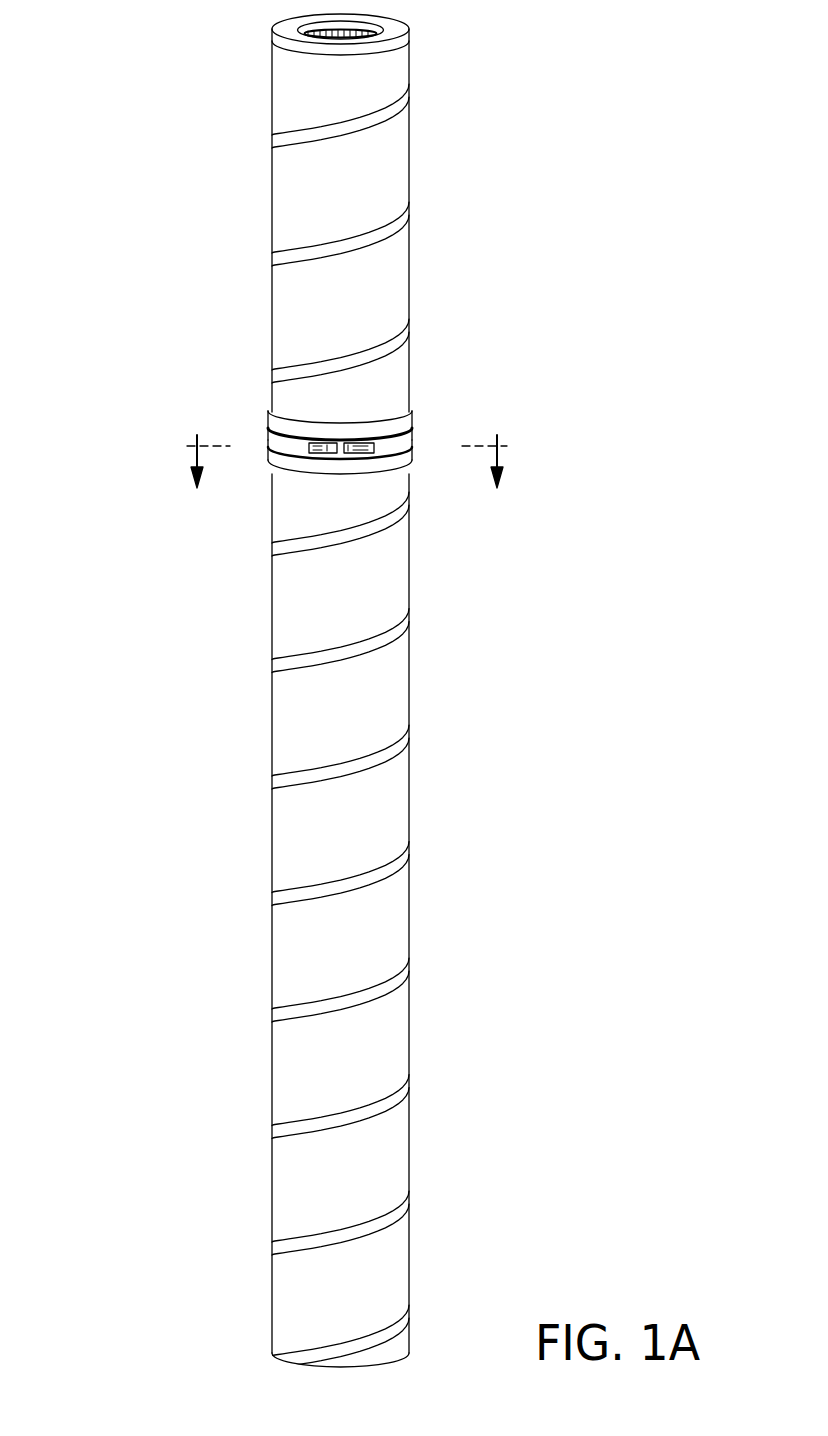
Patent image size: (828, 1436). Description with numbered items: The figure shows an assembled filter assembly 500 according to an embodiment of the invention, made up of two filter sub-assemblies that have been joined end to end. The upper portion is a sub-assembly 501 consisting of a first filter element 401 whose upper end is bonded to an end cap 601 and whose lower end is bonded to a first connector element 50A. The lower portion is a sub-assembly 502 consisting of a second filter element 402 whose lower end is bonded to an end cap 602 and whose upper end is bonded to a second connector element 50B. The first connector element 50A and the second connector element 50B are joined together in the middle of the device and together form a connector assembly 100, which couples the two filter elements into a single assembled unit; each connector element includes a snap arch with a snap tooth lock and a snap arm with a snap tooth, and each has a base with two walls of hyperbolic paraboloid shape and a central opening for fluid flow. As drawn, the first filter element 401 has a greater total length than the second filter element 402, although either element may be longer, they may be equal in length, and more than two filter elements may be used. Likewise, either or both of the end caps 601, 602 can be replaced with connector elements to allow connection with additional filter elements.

The filter assembly 500 is at (92, 75).
The sub-assembly 501 is at (235, 12).
The sub-assembly 502 is at (440, 457).
The first filter element 401 is at (388, 72).
The second filter element 402 is at (298, 1197).
The end cap 601 is at (372, 22).
The end cap 602 is at (300, 1360).
The connector assembly 100 is at (396, 472).
The first connector element 50A is at (405, 443).
The second connector element 50B is at (290, 461).